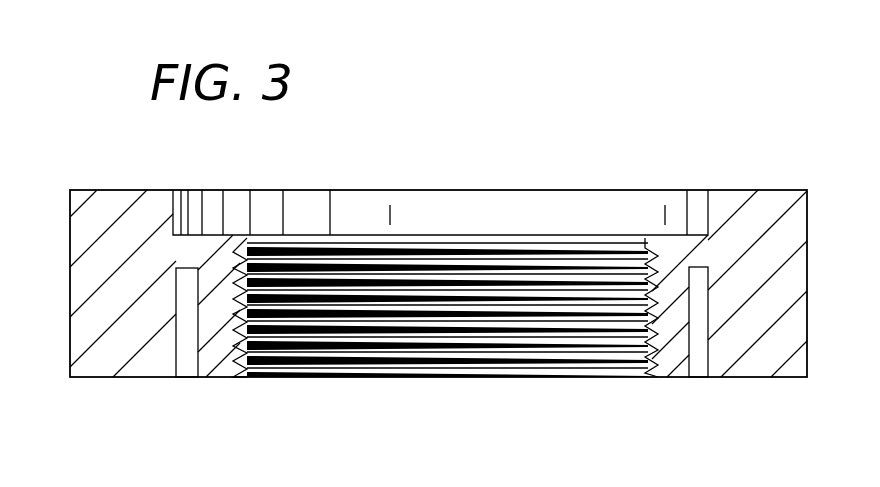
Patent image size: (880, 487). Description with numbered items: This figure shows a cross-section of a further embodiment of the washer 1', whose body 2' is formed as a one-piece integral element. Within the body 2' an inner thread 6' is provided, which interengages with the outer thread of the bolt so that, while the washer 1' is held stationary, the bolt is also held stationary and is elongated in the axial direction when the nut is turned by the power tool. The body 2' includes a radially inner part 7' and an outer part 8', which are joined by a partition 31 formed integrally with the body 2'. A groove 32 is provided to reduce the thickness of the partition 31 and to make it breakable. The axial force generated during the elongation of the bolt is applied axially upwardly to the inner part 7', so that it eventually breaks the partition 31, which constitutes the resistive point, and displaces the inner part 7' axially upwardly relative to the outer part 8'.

The washer 1' is at (417, 252).
The body 2' is at (461, 283).
The inner thread 6' is at (445, 350).
The inner part 7' is at (662, 351).
The outer part 8' is at (155, 365).
The partition 31 is at (696, 266).
The groove 32 is at (698, 365).